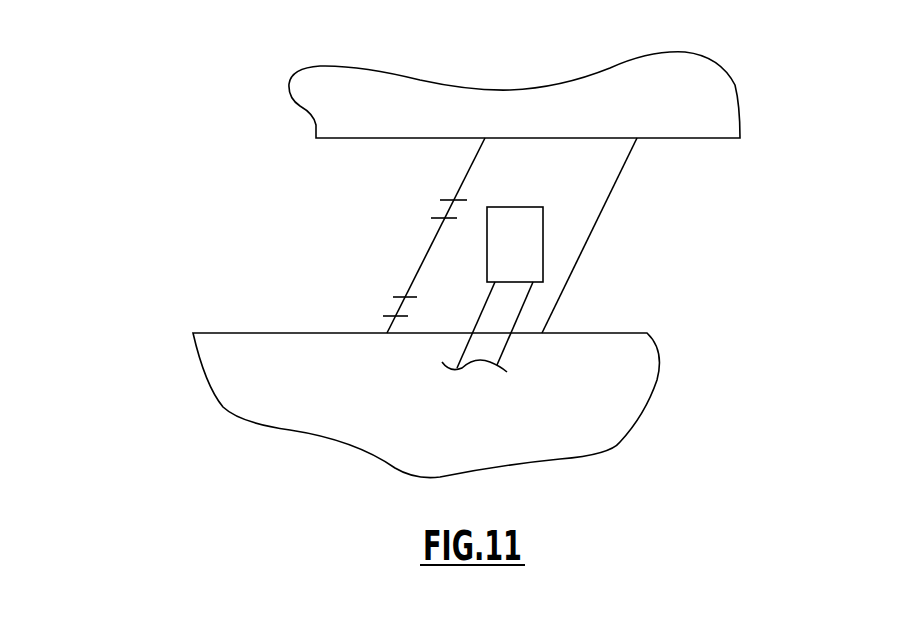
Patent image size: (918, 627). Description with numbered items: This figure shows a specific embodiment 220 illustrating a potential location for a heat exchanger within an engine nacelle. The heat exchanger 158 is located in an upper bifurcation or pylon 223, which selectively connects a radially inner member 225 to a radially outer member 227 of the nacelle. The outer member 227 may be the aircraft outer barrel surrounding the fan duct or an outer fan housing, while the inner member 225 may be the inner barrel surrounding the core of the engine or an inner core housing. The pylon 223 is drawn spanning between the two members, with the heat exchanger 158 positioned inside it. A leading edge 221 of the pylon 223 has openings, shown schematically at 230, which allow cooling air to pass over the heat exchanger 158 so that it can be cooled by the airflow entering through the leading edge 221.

The embodiment 220 is at (128, 78).
The radially outer member 227 is at (716, 99).
The radially inner member 225 is at (643, 378).
The leading edge 221 is at (423, 262).
The upper bifurcation or pylon 223 is at (597, 180).
The openings 230 is at (442, 211).
The heat exchanger 158 is at (530, 243).